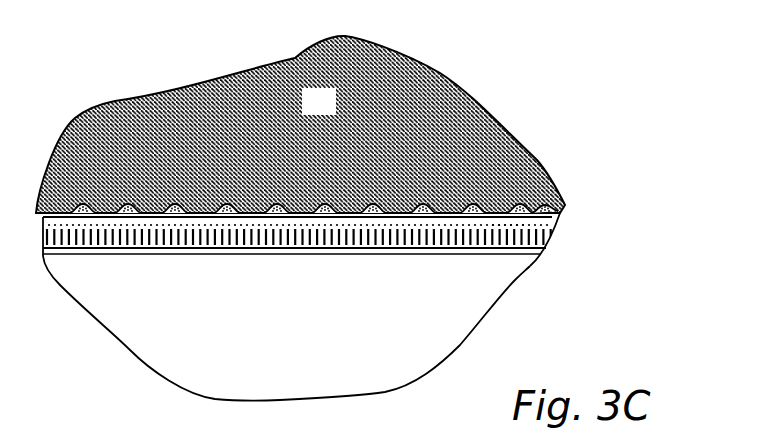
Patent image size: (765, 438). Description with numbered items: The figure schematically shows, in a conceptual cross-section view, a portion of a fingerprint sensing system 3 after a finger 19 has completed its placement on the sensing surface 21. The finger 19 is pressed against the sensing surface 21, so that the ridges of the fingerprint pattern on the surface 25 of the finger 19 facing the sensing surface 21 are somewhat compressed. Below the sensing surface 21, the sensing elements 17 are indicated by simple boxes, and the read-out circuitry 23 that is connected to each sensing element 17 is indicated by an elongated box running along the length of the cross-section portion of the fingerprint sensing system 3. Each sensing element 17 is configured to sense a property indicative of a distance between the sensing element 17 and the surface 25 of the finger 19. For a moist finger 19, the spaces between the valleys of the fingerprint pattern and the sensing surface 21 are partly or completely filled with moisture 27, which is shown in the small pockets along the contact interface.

The fingerprint sensing system 3 is at (348, 213).
The sensing element 17 is at (242, 218).
The finger 19 is at (334, 113).
The sensing surface 21 is at (563, 205).
The read-out circuitry 23 is at (187, 254).
The surface of the finger 25 is at (322, 206).
The moisture 27 is at (368, 214).